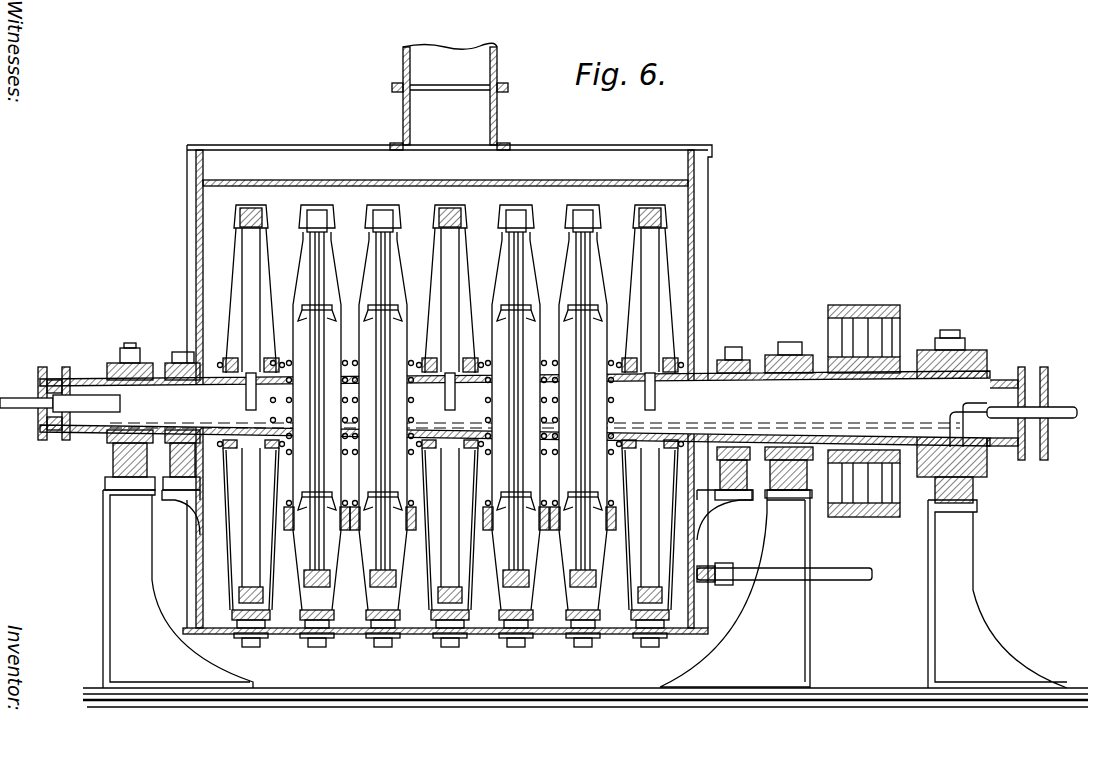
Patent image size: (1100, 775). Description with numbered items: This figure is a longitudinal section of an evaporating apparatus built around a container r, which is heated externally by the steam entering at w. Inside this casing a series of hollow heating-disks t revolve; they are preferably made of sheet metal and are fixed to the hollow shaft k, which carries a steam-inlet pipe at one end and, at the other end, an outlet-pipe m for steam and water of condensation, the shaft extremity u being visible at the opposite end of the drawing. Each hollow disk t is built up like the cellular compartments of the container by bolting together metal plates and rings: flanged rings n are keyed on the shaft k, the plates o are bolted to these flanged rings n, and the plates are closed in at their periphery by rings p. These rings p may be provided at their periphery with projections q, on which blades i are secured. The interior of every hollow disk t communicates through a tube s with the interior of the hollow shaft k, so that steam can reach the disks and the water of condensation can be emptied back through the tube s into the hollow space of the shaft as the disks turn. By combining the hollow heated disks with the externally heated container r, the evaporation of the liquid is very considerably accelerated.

The blade i is at (531, 595).
The ring p is at (450, 405).
The hollow heating-disk t is at (450, 407).
The plate o is at (449, 396).
The flanged ring n is at (451, 436).
The tube s is at (442, 391).
The projection q is at (449, 407).
The container r is at (456, 609).
The shaft u is at (68, 403).
The hollow shaft k is at (515, 408).
The outlet-pipe m is at (966, 392).
The steam entry w is at (776, 568).